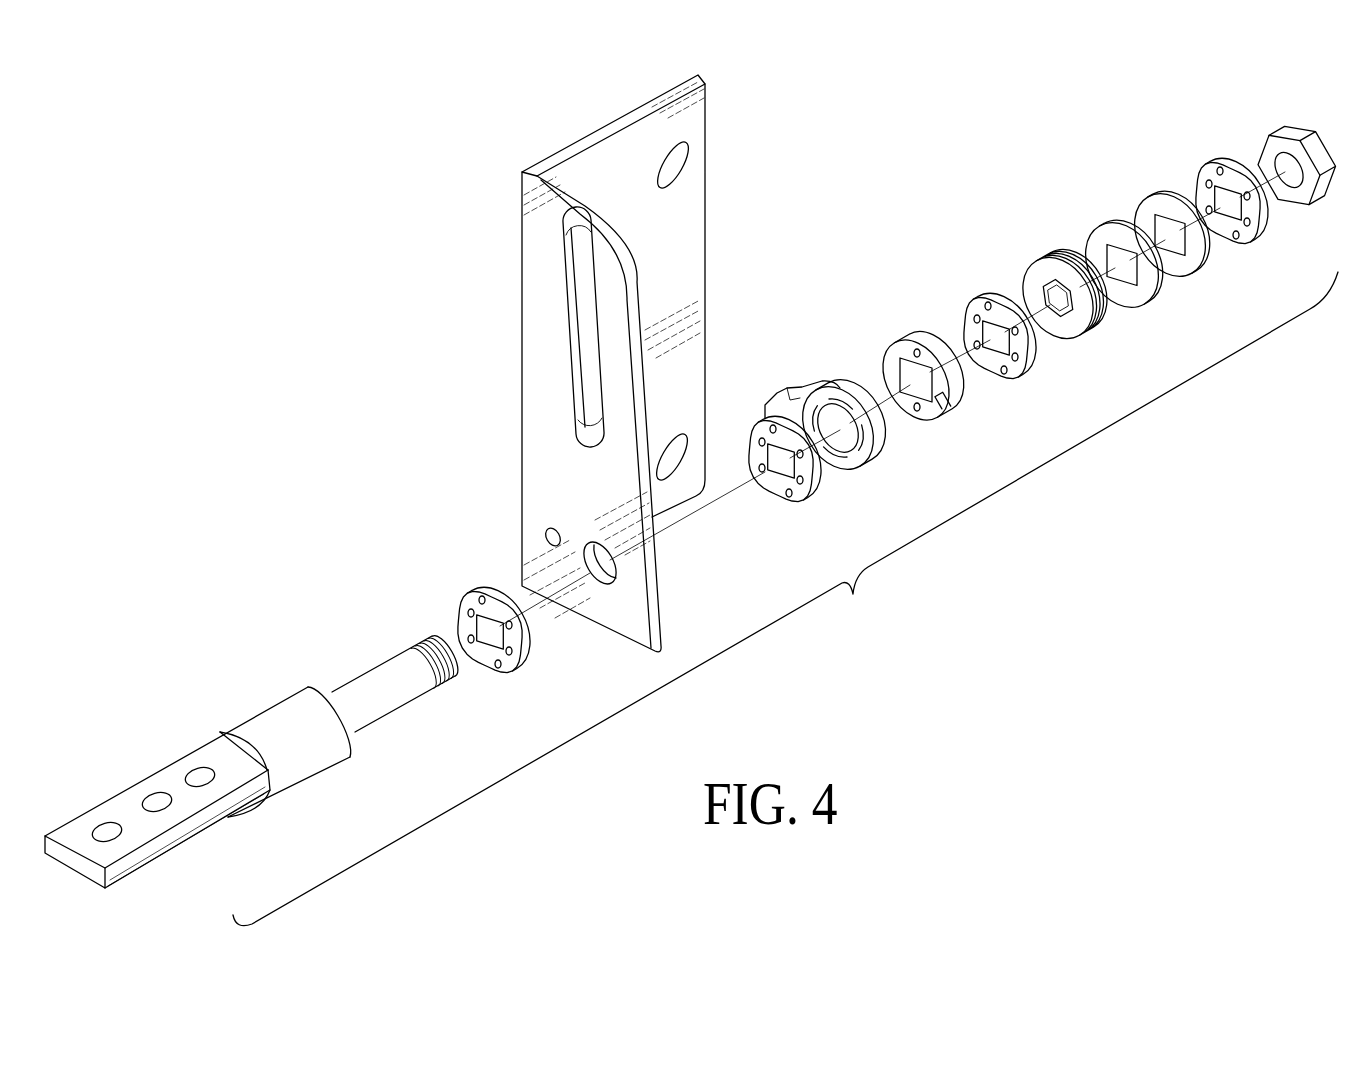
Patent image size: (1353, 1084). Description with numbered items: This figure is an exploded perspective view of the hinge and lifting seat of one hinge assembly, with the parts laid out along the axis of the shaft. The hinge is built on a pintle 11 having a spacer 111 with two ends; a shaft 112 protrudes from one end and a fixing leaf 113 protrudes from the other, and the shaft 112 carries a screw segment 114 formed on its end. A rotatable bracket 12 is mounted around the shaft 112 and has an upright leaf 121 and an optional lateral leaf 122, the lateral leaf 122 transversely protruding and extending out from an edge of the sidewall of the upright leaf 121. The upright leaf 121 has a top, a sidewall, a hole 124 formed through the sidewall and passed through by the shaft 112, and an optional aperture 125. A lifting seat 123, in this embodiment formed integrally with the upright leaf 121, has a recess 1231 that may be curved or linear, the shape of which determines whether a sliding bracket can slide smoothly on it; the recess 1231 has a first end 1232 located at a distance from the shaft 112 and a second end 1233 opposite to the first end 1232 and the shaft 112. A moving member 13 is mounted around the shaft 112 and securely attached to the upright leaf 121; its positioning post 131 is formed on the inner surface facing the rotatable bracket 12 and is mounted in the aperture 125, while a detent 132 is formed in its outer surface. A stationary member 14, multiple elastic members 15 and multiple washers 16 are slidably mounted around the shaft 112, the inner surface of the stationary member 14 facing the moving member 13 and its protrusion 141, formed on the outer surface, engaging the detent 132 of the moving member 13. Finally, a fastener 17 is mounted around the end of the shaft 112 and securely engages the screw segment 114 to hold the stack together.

The pintle 11 is at (158, 632).
The spacer 111 is at (262, 700).
The shaft 112 is at (378, 672).
The fixing leaf 113 is at (217, 810).
The screw segment 114 is at (445, 667).
The rotatable bracket 12 is at (602, 116).
The upright leaf 121 is at (652, 540).
The lateral leaf 122 is at (703, 245).
The lifting seat 123 is at (545, 212).
The recess 1231 is at (587, 376).
The first end 1232 is at (588, 417).
The second end 1233 is at (575, 231).
The hole 124 is at (612, 577).
The aperture 125 is at (548, 534).
The moving member 13 is at (790, 395).
The positioning post 131 is at (776, 424).
The detent 132 is at (846, 378).
The stationary member 14 is at (917, 338).
The protrusion 141 is at (945, 398).
The elastic members 15 is at (1153, 194).
The washers 16 is at (980, 298).
The fastener 17 is at (1273, 125).